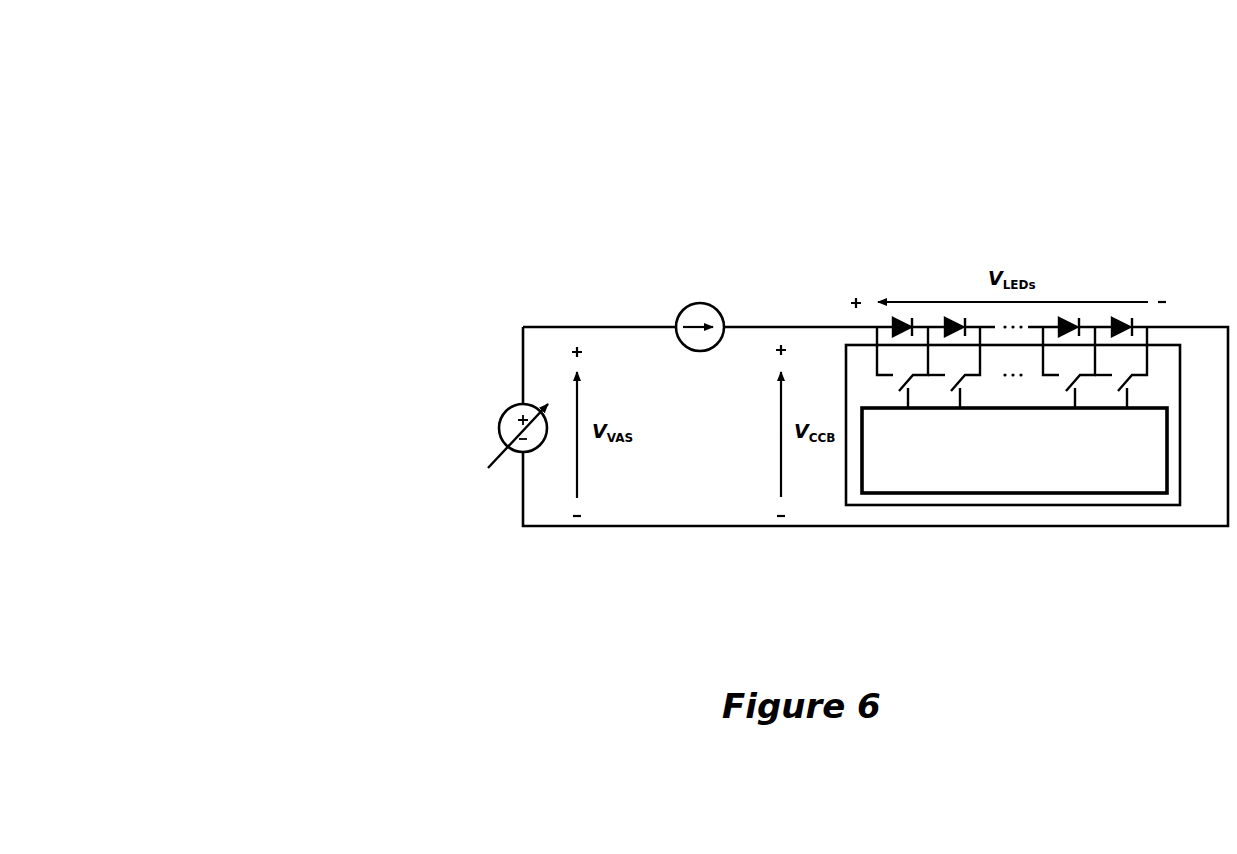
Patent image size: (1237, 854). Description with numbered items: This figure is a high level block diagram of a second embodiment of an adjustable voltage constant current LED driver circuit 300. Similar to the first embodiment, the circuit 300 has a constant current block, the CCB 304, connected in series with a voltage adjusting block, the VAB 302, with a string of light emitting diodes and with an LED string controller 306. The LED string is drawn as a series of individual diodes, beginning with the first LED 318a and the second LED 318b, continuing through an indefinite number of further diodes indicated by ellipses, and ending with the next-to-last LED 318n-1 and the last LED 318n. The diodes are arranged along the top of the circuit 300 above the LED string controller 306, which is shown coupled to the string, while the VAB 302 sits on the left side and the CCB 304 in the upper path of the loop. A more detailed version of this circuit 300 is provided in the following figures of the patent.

The adjustable voltage constant current LED driver circuit 300 is at (300, 150).
The VAB 302 is at (523, 402).
The CCB 304 is at (680, 305).
The LED string controller 306 is at (905, 480).
The LED 318a is at (890, 331).
The LED 318b is at (951, 331).
The LED 318n-1 is at (1053, 330).
The LED 318n is at (1122, 333).